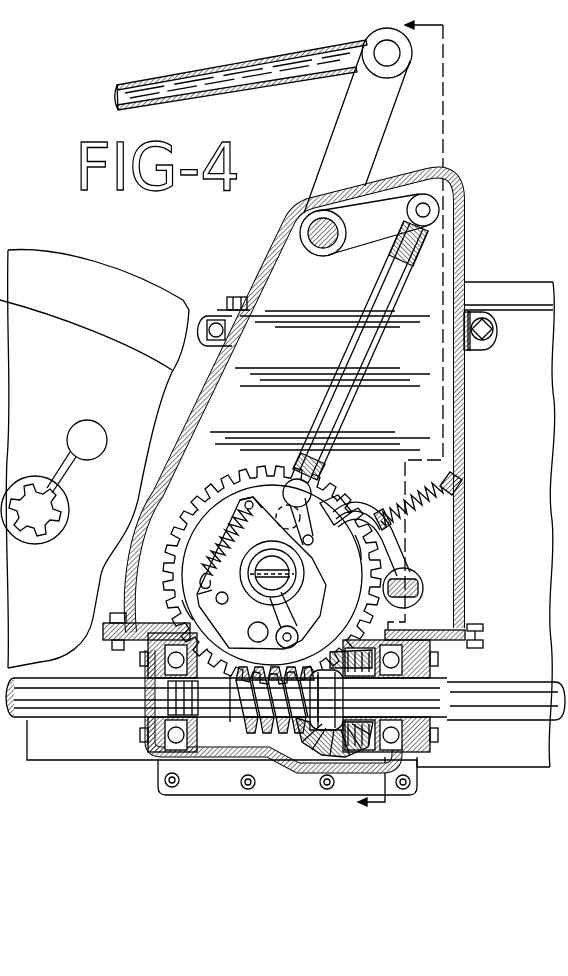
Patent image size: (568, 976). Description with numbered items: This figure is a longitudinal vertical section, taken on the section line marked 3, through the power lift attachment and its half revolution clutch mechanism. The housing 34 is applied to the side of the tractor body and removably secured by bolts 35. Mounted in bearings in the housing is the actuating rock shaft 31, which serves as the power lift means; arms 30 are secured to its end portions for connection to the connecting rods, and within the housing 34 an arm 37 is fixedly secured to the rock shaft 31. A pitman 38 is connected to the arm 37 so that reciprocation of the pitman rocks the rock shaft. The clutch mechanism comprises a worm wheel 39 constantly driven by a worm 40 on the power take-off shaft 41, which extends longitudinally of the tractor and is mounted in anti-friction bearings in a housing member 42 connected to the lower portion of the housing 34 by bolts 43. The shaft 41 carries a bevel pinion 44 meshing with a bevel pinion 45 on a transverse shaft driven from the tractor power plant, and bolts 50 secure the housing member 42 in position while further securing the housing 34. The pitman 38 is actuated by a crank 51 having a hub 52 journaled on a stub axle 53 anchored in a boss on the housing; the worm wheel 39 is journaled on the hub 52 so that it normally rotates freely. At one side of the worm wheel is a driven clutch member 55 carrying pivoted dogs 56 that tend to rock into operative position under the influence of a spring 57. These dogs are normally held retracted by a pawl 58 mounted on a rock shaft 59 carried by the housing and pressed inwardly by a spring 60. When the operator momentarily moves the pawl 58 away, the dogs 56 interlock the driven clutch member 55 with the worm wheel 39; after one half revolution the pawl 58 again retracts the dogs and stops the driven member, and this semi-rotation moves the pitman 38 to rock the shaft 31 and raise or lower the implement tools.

The section line 3- 3 is at (389, 420).
The arm 30 is at (340, 152).
The actuating rock shaft 31 is at (324, 250).
The housing 34 is at (437, 427).
The bolt 35 is at (217, 339).
The arm 37 is at (376, 244).
The pitman 38 is at (352, 362).
The worm wheel 39 is at (222, 500).
The worm 40 is at (246, 727).
The power take-off shaft 41 is at (107, 706).
The housing member 42 is at (200, 758).
The bolt 43 is at (478, 614).
The bevel pinion 44 is at (398, 634).
The bevel pinion 45 is at (272, 760).
The bolt 50 is at (180, 786).
The crank 51 is at (306, 504).
The hub 52 is at (322, 578).
The stub axle 53 is at (300, 634).
The driven clutch member 55 is at (246, 496).
The dog 56 is at (357, 542).
The spring 57 is at (224, 540).
The pawl 58 is at (348, 496).
The rock shaft 59 is at (413, 578).
The spring 60 is at (420, 503).